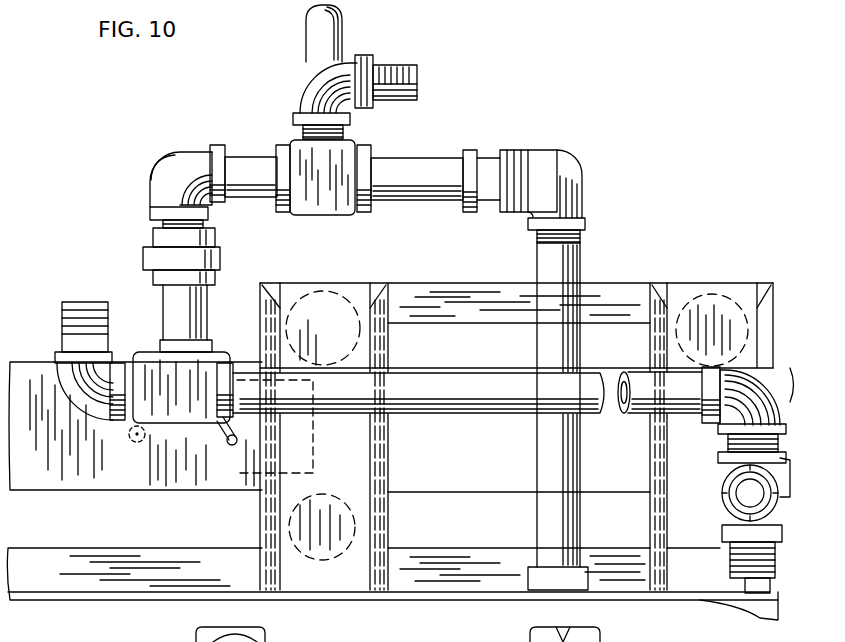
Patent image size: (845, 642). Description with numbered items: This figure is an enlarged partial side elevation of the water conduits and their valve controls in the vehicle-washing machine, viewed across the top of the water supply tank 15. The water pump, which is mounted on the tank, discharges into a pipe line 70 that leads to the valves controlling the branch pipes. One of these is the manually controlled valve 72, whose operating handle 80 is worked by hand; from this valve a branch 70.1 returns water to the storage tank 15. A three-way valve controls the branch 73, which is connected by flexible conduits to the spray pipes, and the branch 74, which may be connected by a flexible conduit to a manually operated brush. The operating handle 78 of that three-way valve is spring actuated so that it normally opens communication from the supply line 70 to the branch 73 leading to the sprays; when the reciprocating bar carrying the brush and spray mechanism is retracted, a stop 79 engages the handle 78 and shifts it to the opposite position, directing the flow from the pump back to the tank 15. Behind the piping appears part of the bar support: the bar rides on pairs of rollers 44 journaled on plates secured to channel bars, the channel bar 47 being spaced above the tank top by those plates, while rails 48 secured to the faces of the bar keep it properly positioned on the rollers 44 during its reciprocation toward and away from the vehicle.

The water supply tank 15 is at (92, 594).
The rollers 44 is at (341, 308).
The channel bar 47 is at (466, 294).
The rails 48 is at (448, 563).
The pipe line 70 is at (67, 338).
The branch 70.1 is at (583, 258).
The valve 72 is at (340, 202).
The branch pipe 73 is at (442, 403).
The branch pipe 74 is at (390, 100).
The operating handle 78 is at (230, 446).
The stop 79 is at (243, 472).
The operating handle 80 is at (170, 157).